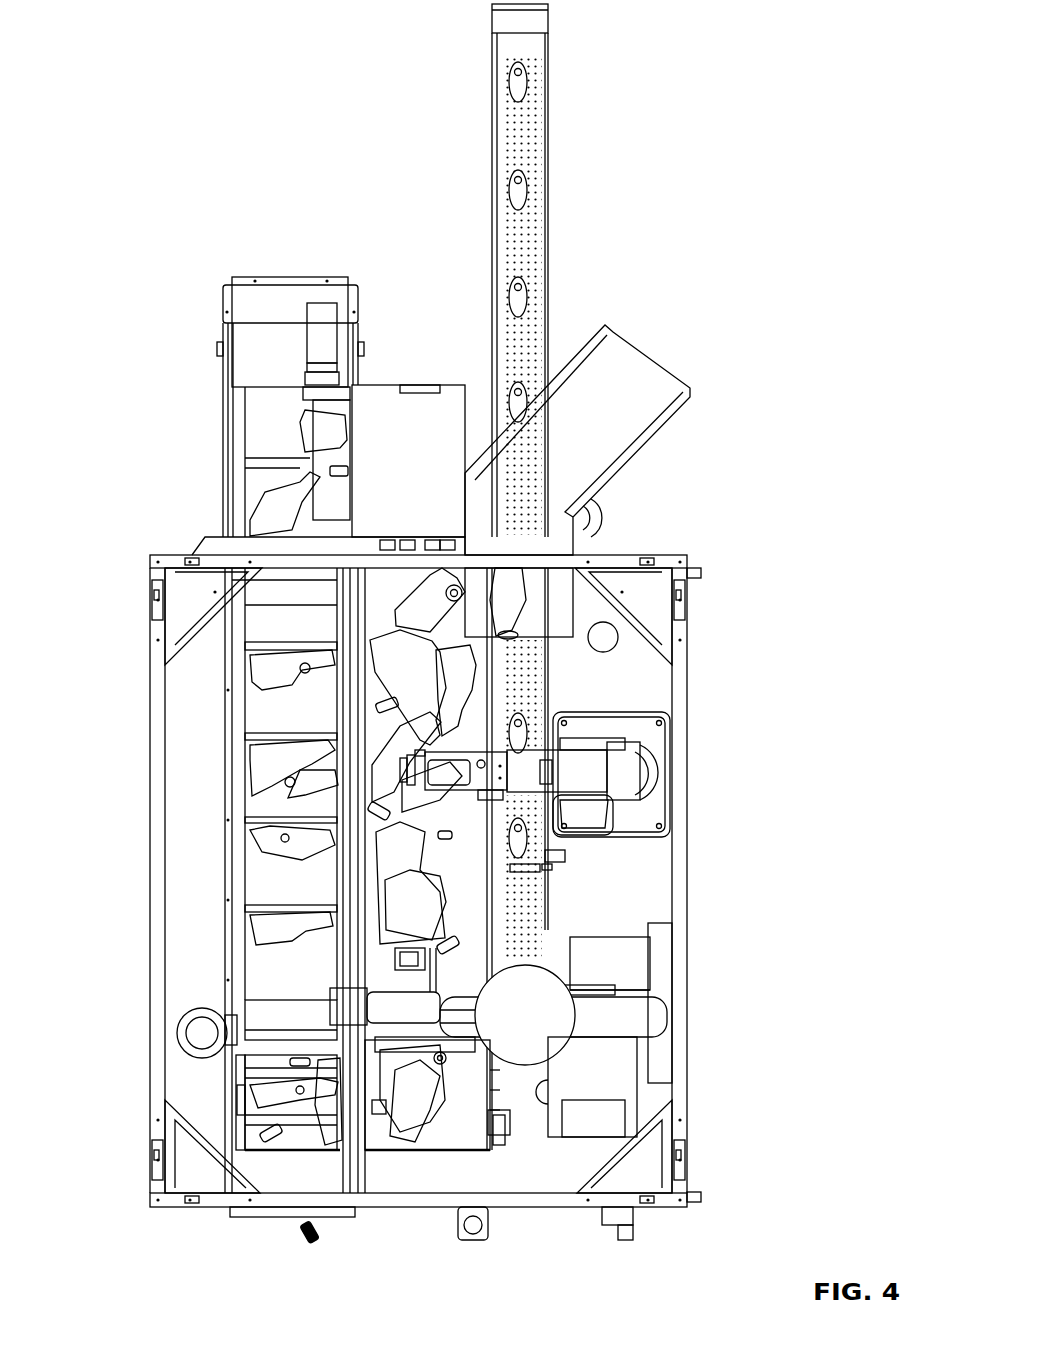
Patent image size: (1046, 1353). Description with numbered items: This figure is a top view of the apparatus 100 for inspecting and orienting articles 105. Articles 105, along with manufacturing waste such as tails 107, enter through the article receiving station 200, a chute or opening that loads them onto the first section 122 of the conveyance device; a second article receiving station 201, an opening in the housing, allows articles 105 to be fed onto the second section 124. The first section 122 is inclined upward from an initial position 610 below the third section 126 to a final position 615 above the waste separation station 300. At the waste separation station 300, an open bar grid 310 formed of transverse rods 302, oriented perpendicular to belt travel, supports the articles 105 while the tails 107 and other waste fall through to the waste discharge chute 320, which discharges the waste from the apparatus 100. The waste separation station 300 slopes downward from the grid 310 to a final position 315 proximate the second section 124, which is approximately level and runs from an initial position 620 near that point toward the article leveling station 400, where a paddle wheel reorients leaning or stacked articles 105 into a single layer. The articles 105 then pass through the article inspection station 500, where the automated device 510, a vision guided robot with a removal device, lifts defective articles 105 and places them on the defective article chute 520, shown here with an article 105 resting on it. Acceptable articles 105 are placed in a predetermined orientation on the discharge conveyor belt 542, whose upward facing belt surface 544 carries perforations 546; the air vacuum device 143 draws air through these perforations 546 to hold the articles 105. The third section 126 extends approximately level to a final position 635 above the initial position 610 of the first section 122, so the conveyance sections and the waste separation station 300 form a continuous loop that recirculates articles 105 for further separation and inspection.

The apparatus 100 is at (235, 122).
The articles 105 is at (520, 200).
The tails 107 is at (318, 1243).
The first section 122 is at (262, 712).
The second section 124 is at (465, 850).
The third section 126 is at (300, 467).
The air vacuum device 143 is at (556, 1055).
The article receiving station 200 is at (222, 466).
The second article receiving station 201 is at (222, 780).
The waste separation station 300 is at (243, 1113).
The rods 302 is at (235, 1105).
The open bar grid 310 is at (245, 1088).
The final position 315 is at (380, 1125).
The waste discharge chute 320 is at (282, 1218).
The article leveling station 400 is at (428, 1011).
The article inspection station 500 is at (468, 711).
The automated device 510 is at (638, 765).
The defective article chute 520 is at (577, 440).
The conveyor belt 542 is at (550, 97).
The belt surface 544 is at (535, 47).
The perforations 546 is at (527, 135).
The initial position 610 is at (240, 437).
The final position 615 is at (262, 1032).
The initial position 620 is at (435, 1138).
The final position 635 is at (325, 495).